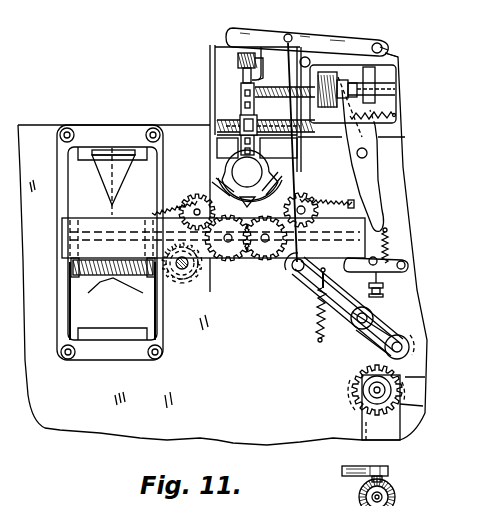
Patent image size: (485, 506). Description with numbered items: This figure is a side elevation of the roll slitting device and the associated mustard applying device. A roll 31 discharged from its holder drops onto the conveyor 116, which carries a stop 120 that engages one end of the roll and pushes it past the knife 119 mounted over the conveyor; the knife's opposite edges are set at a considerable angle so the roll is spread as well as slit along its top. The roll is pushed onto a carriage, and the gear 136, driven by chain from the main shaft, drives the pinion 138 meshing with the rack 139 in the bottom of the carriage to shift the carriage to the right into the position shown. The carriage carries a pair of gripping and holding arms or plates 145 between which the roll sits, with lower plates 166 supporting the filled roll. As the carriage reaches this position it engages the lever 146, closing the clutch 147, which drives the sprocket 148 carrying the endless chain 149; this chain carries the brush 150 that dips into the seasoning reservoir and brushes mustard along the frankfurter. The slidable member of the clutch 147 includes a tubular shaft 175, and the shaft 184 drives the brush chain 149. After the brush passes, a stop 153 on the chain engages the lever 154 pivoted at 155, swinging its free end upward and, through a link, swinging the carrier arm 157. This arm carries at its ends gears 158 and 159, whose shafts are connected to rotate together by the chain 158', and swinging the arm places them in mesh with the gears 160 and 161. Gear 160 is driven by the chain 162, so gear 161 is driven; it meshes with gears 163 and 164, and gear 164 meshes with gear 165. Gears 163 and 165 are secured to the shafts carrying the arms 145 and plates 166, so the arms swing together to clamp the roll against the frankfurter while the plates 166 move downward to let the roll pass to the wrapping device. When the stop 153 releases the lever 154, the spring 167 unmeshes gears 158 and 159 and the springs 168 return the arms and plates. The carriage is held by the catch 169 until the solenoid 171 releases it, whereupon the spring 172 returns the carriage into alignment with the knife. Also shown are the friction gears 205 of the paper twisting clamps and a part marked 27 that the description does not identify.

The lever 154 is at (280, 26).
The clutch 147 is at (337, 73).
The pivot 155 is at (386, 48).
The brush 150 is at (240, 62).
The stop 153 is at (263, 63).
The endless chain 149 is at (241, 92).
The sprocket 148 is at (218, 114).
The tubular shaft 175 is at (385, 80).
The shaft 184 is at (285, 101).
The roll 31 is at (278, 165).
The gear 136 is at (293, 150).
The gripping and holding arms or plates 145 is at (213, 182).
The dial 27 is at (250, 176).
The gear 165 is at (192, 189).
The lower plates 166 is at (236, 198).
The gear 163 is at (313, 188).
The lever 146 is at (372, 190).
The springs 168 is at (160, 212).
The knife 119 is at (105, 180).
The spring 172 is at (150, 232).
The rack 139 is at (199, 275).
The pinion 138 is at (186, 280).
The gear 164 is at (243, 264).
The gear 161 is at (267, 264).
The gear 159 is at (300, 284).
The carrier arm 157 is at (303, 303).
The chain 158' is at (353, 308).
The spring 167 is at (318, 340).
The conveyor 116 is at (97, 272).
The stop 120 is at (108, 295).
The catch 169 is at (393, 273).
The solenoid 171 is at (386, 293).
The gear 158 is at (406, 385).
The gear 160 is at (356, 383).
The chain 162 is at (362, 427).
The gears 205 is at (392, 498).